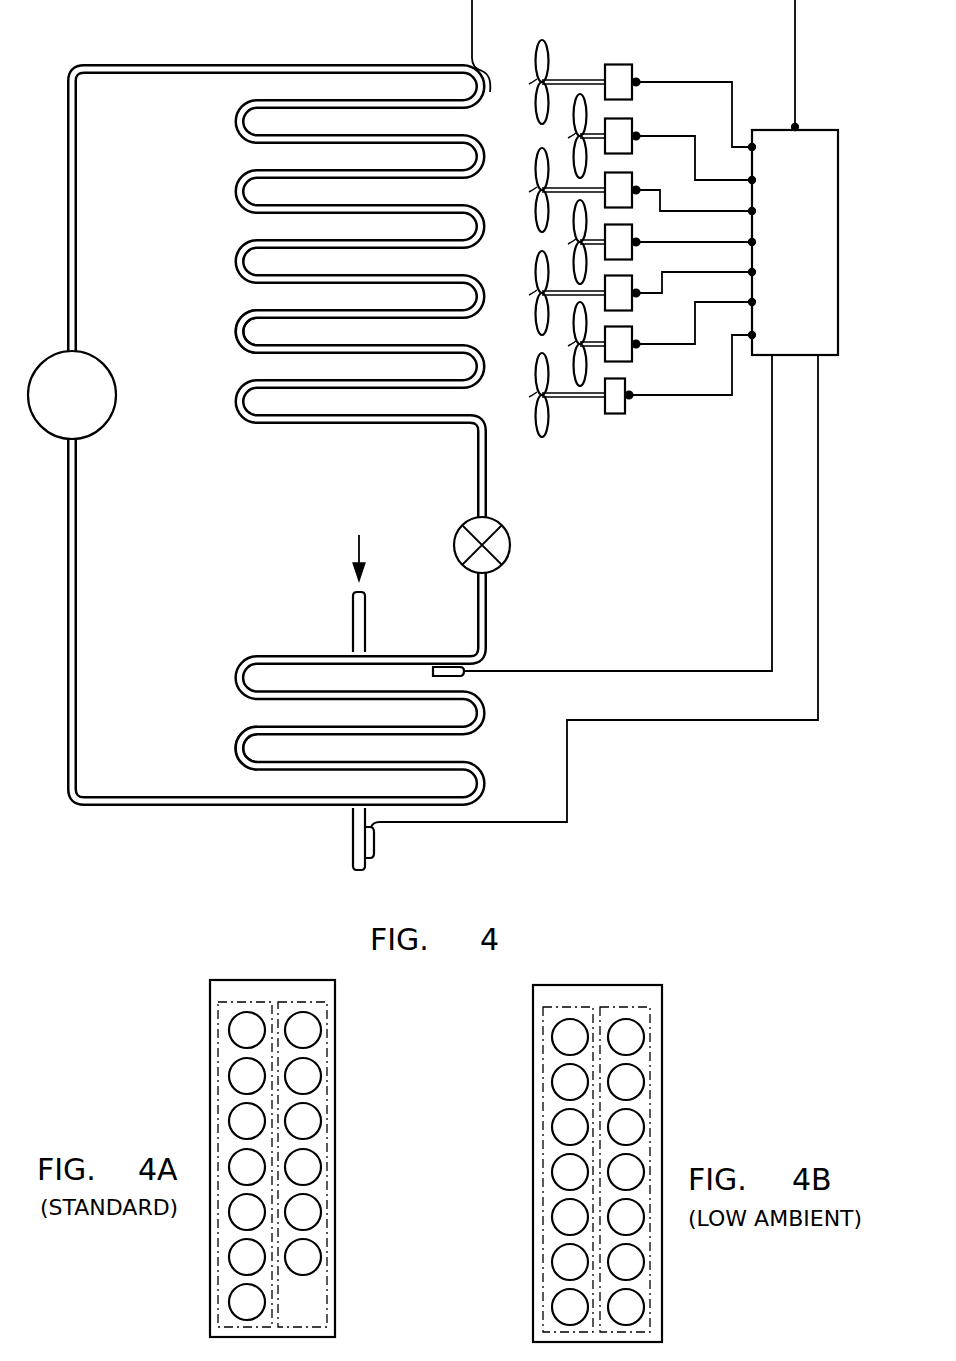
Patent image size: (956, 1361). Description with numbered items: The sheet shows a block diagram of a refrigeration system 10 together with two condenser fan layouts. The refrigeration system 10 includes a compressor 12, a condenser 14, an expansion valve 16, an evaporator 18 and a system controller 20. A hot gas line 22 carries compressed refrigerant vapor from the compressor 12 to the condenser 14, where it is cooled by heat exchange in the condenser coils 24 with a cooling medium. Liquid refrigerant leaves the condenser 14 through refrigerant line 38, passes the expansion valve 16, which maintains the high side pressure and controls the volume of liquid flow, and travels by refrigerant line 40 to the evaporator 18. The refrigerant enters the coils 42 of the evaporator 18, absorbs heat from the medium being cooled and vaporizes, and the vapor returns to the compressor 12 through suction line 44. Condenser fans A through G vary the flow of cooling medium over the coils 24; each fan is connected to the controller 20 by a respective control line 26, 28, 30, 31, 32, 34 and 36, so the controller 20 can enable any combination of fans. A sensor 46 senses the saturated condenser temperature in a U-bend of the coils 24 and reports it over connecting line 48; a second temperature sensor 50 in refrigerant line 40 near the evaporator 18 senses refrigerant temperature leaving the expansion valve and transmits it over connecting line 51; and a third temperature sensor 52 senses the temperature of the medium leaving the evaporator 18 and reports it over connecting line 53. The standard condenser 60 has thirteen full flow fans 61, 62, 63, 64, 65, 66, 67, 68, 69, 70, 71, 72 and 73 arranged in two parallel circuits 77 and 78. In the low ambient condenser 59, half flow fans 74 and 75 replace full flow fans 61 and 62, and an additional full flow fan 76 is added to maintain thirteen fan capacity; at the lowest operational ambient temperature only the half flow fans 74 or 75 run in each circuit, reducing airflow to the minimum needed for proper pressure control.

In FIG. 1, the refrigeration system 10 is at (68, 27).
In FIG. 1, the compressor 12 is at (60, 408).
In FIG. 1, the condenser 14 is at (340, 63).
In FIG. 1, the expansion valve 16 is at (510, 535).
In FIG. 1, the evaporator 18 is at (283, 656).
In FIG. 1, the system controller 20 is at (782, 279).
In FIG. 1, the hot gas line 22 is at (172, 63).
In FIG. 1, the condenser coils 24 is at (234, 330).
In FIG. 1, the control line 26 is at (703, 81).
In FIG. 1, the control line 28 is at (684, 136).
In FIG. 1, the control line 30 is at (662, 197).
In FIG. 1, the control line 31 is at (681, 242).
In FIG. 1, the control line 32 is at (686, 272).
In FIG. 1, the control line 34 is at (695, 331).
In FIG. 1, the control line 36 is at (698, 394).
In FIG. 1, the refrigerant line 38 is at (331, 425).
In FIG. 1, the refrigerant line 40 is at (477, 607).
In FIG. 1, the evaporator coils 42 is at (235, 742).
In FIG. 1, the suction line 44 is at (78, 702).
In FIG. 1, the sensor 46 is at (473, 33).
In FIG. 1, the connecting line 48 is at (797, 50).
In FIG. 1, the second temperature sensor 50 is at (466, 677).
In FIG. 1, the connecting line 51 is at (770, 553).
In FIG. 1, the third temperature sensor 52 is at (376, 846).
In FIG. 1, the connecting line 53 is at (818, 612).
In FIG. 4B, the condenser 59 is at (534, 1058).
In FIG. 4A, the standard condenser 60 is at (211, 1015).
In FIG. 4A, the full flow fan 61 is at (239, 1040).
In FIG. 4A, the full flow fan 62 is at (295, 1040).
In FIG. 4A, the full flow fan 63 is at (239, 1086).
In FIG. 4B, the full flow fan 63 is at (562, 1092).
In FIG. 4A, the full flow fan 64 is at (295, 1086).
In FIG. 4B, the full flow fan 64 is at (618, 1092).
In FIG. 4A, the full flow fan 65 is at (239, 1131).
In FIG. 4B, the full flow fan 65 is at (562, 1137).
In FIG. 4A, the full flow fan 66 is at (295, 1131).
In FIG. 4B, the full flow fan 66 is at (618, 1137).
In FIG. 4A, the full flow fan 67 is at (239, 1177).
In FIG. 4B, the full flow fan 67 is at (562, 1182).
In FIG. 4A, the full flow fan 68 is at (295, 1177).
In FIG. 4B, the full flow fan 68 is at (618, 1182).
In FIG. 4A, the full flow fan 69 is at (239, 1222).
In FIG. 4B, the full flow fan 69 is at (562, 1227).
In FIG. 4A, the full flow fan 70 is at (295, 1222).
In FIG. 4B, the full flow fan 70 is at (618, 1227).
In FIG. 4A, the full flow fan 71 is at (239, 1267).
In FIG. 4B, the full flow fan 71 is at (562, 1272).
In FIG. 4A, the full flow fan 72 is at (295, 1267).
In FIG. 4B, the full flow fan 72 is at (618, 1272).
In FIG. 4A, the full flow fan 73 is at (239, 1312).
In FIG. 4B, the full flow fan 73 is at (562, 1317).
In FIG. 4B, the half flow fan 74 is at (552, 1030).
In FIG. 4B, the half flow fan 75 is at (641, 1022).
In FIG. 4B, the additional full flow fan 76 is at (644, 1298).
In FIG. 4A, the parallel circuit 77 is at (238, 1002).
In FIG. 4B, the parallel circuit 77 is at (575, 1002).
In FIG. 4A, the parallel circuit 78 is at (315, 1002).
In FIG. 4B, the parallel circuit 78 is at (641, 1002).